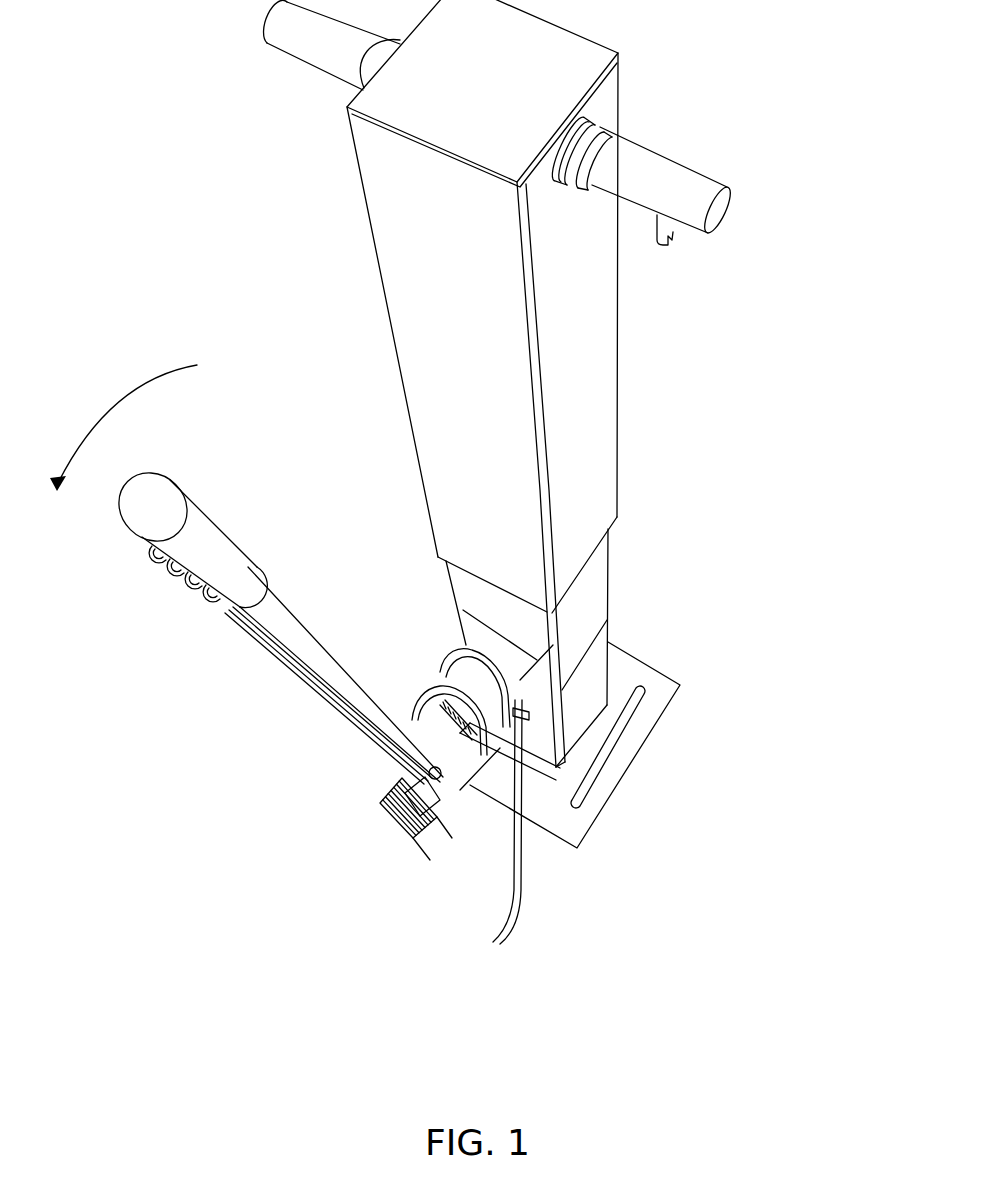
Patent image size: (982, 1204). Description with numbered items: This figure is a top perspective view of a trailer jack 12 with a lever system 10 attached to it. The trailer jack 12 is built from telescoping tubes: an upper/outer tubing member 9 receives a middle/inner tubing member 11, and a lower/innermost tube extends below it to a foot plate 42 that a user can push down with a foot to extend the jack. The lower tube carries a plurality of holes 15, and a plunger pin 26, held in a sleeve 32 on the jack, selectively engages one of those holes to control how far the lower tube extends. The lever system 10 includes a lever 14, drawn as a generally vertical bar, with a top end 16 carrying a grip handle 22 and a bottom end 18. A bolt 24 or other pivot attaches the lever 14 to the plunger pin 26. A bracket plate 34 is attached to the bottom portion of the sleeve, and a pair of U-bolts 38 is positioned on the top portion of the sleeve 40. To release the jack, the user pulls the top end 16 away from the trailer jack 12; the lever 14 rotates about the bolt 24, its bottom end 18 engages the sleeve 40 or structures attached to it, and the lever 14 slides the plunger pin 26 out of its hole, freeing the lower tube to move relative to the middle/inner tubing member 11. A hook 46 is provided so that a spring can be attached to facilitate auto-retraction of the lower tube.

The upper/outer tubing member 9 is at (597, 420).
The lever system 10 is at (248, 645).
The middle/inner tubing member 11 is at (595, 575).
The trailer jack 12 is at (597, 333).
The lever 14 is at (325, 706).
The holes 15 is at (493, 942).
The top end 16 is at (260, 570).
The bottom end 18 is at (432, 840).
The grip handle 22 is at (163, 487).
The bolt 24 is at (407, 823).
The plunger pin 26 is at (393, 788).
The sleeve 32 is at (485, 780).
The bracket plate 34 is at (397, 820).
The U-bolts 38 is at (440, 672).
The top portion of the sleeve 40 is at (553, 645).
The foot plate 42 is at (633, 752).
The hook 46 is at (672, 240).